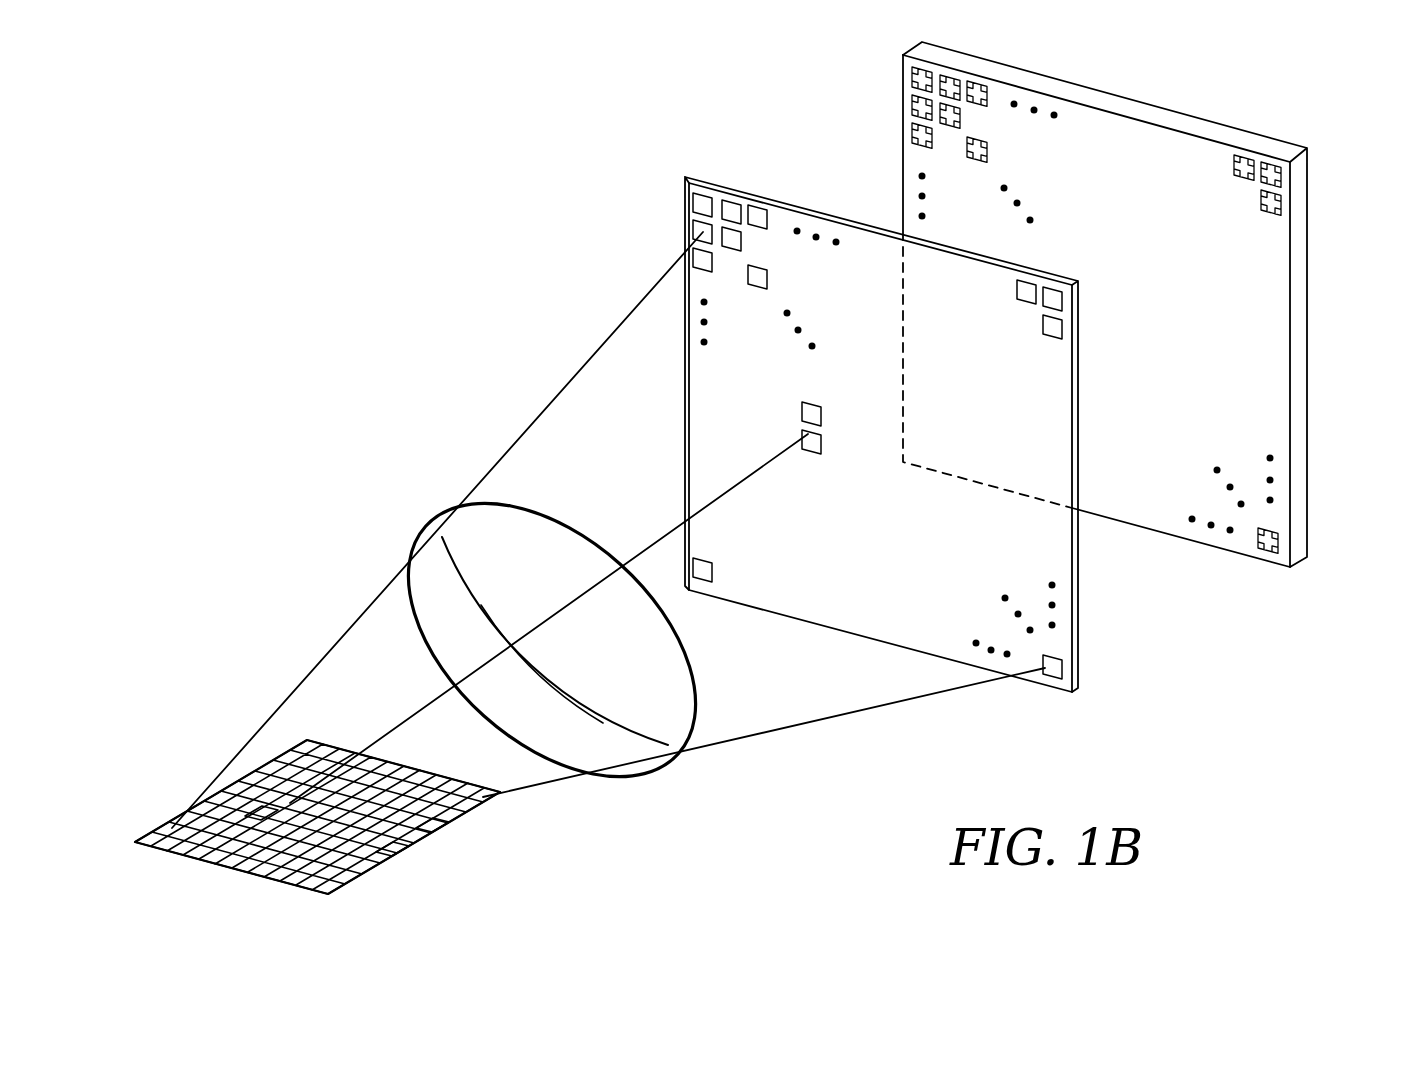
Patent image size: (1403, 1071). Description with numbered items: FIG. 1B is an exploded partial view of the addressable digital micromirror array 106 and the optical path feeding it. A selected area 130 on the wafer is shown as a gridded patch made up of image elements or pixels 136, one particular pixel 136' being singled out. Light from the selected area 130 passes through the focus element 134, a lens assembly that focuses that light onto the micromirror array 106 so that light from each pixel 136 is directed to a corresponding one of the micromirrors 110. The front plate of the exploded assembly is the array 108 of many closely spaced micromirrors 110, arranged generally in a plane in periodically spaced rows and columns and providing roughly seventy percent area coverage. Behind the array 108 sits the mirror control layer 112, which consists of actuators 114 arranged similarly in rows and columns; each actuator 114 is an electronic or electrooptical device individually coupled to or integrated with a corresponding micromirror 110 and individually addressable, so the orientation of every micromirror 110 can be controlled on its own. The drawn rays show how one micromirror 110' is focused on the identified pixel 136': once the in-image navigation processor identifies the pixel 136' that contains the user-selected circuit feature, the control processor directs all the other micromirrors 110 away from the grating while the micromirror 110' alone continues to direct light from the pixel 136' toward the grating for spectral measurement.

The addressable digital micromirror array 106 is at (712, 127).
The array of micromirrors 108 is at (1074, 637).
The micromirrors 110 is at (655, 218).
The micromirror focused on the identified pixel 110' is at (765, 418).
The mirror control layer 112 is at (1298, 488).
The actuators 114 is at (912, 131).
The selected area 130 is at (162, 818).
The focus element 134 is at (418, 518).
The pixels 136 is at (417, 862).
The identified pixel 136' is at (246, 749).